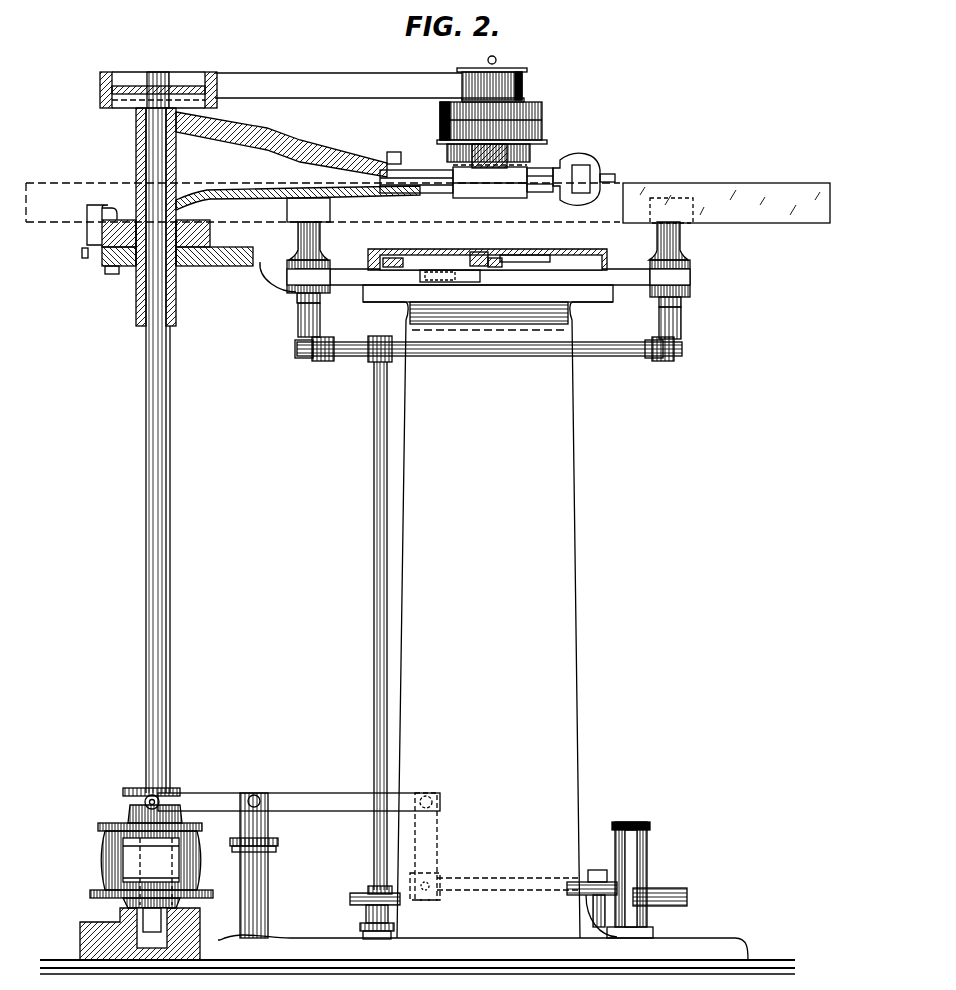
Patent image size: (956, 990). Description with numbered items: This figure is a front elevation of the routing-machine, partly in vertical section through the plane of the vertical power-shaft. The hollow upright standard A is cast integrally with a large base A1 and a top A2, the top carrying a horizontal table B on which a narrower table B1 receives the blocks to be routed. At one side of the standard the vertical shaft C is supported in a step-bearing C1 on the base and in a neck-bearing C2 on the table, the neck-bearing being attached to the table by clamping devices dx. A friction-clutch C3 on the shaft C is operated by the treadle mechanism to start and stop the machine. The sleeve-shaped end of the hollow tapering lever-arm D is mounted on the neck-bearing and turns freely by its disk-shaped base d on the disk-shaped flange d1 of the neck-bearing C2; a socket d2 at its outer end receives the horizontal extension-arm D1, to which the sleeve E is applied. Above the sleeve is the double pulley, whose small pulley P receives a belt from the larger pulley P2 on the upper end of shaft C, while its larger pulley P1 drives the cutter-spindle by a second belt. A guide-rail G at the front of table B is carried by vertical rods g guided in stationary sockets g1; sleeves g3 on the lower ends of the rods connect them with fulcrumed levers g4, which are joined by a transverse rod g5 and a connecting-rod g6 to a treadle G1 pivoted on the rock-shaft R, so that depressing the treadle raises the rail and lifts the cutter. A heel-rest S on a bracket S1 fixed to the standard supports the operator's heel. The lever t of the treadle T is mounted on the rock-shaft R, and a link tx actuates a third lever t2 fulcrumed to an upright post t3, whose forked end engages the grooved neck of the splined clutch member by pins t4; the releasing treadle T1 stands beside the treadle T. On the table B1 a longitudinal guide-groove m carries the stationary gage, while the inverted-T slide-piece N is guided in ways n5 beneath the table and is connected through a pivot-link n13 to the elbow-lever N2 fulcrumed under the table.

The larger pulley P2 is at (100, 90).
The small pulley P is at (527, 86).
The larger pulley P1 is at (542, 120).
The neck-bearing C2 is at (136, 128).
The vertical shaft C is at (145, 505).
The hollow tapering lever-arm D is at (298, 167).
The socket d2 is at (400, 149).
The horizontal extension-arm D1 is at (440, 193).
The sleeve E is at (485, 190).
The guide-rail G is at (718, 200).
The vertical rods g is at (272, 305).
The clamping devices dx is at (92, 215).
The disk-shaped base d is at (105, 228).
The disk-shaped flange d1 is at (118, 238).
The horizontal table B is at (262, 268).
The narrower table B1 is at (488, 247).
The stationary sockets g1 is at (705, 243).
The elbow-lever N2 is at (395, 260).
The slide-piece N is at (482, 252).
The longitudinal guide-groove m is at (510, 254).
The ways n5 is at (503, 263).
The pivot-link n13 is at (460, 280).
The top A2 is at (383, 300).
The sleeves g3 is at (298, 326).
The fulcrumed levers g4 is at (322, 360).
The transverse rod g5 is at (475, 356).
The connecting-rod g6 is at (373, 615).
The hollow upright standard A is at (488, 620).
The pins t4 is at (160, 800).
The third lever t2 is at (312, 806).
The upright post t3 is at (258, 866).
The friction-clutch C3 is at (102, 850).
The step-bearing C1 is at (80, 942).
The link tx is at (430, 832).
The rock-shaft R is at (508, 874).
The heel-rest S is at (370, 892).
The treadle G1 is at (352, 898).
The arm or bracket S1 is at (390, 922).
The lever of treadle T t is at (618, 874).
The treadle T is at (573, 890).
The releasing treadle T1 is at (687, 898).
The base A1 is at (292, 940).